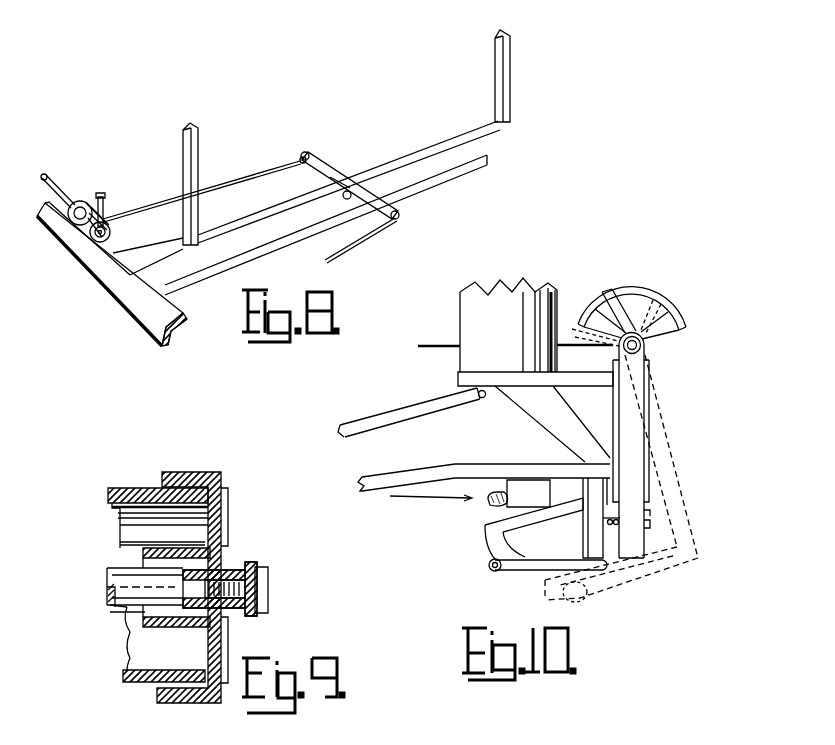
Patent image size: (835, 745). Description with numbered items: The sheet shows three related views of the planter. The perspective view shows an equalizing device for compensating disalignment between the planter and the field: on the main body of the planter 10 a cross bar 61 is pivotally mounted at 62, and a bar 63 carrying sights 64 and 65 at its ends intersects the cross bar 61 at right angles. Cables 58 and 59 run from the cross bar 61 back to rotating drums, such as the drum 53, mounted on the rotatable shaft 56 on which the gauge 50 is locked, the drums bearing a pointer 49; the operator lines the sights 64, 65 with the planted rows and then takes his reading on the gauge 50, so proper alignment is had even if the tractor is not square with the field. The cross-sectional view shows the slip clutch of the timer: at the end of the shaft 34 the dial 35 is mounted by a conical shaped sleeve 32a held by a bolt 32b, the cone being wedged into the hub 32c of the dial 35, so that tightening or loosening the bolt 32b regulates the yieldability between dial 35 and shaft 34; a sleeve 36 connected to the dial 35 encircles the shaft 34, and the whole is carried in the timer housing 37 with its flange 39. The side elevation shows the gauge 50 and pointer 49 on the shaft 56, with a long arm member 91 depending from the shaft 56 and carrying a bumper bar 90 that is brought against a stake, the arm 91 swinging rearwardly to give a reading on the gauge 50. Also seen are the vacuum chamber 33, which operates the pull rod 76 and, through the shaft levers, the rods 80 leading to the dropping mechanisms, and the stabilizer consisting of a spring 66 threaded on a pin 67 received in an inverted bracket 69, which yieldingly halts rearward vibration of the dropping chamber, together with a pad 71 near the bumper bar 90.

In FIG. 8, the main body of the planter 10 is at (259, 246).
In FIG. 8, the pointer 49 is at (104, 203).
In FIG. 10, the pointer 49 is at (609, 292).
In FIG. 10, the gauge 50 is at (664, 301).
In FIG. 8, the drum 53 is at (80, 203).
In FIG. 8, the rotatable shaft 56 is at (52, 165).
In FIG. 10, the rotatable shaft 56 is at (645, 350).
In FIG. 8, the cable 58 is at (365, 236).
In FIG. 8, the cable 59 is at (240, 177).
In FIG. 10, the cable 59 is at (434, 345).
In FIG. 8, the cross bar 61 is at (331, 168).
In FIG. 8, the pivotal mounting 62 is at (380, 178).
In FIG. 8, the bar 63 is at (437, 142).
In FIG. 8, the sight 64 is at (195, 123).
In FIG. 8, the sight 65 is at (505, 38).
In FIG. 9, the conical shaped sleeve 32a is at (255, 613).
In FIG. 9, the bolt 32b is at (270, 589).
In FIG. 9, the hub of the dial 32c is at (245, 567).
In FIG. 9, the shaft 34 is at (112, 571).
In FIG. 9, the dial 35 is at (210, 471).
In FIG. 9, the sleeve 36 is at (170, 628).
In FIG. 9, the timer housing 37 is at (115, 487).
In FIG. 9, the flange 39 is at (230, 522).
In FIG. 10, the vacuum chamber unit 33 is at (508, 501).
In FIG. 10, the spring 66 is at (612, 535).
In FIG. 10, the pin 67 is at (656, 513).
In FIG. 10, the inverted bracket 69 is at (651, 527).
In FIG. 10, the pad 71 is at (560, 593).
In FIG. 10, the pull rod 76 is at (410, 499).
In FIG. 10, the rod 80 is at (370, 423).
In FIG. 10, the bumper bar 90 is at (489, 566).
In FIG. 10, the long arm member 91 is at (685, 558).